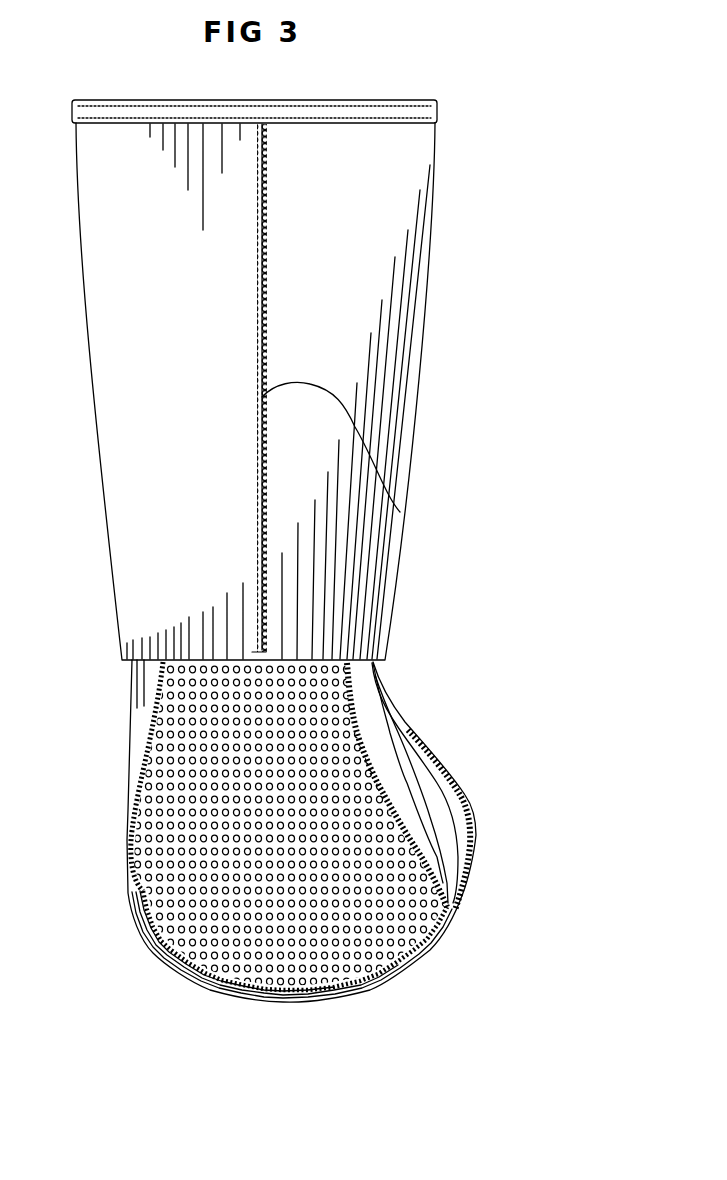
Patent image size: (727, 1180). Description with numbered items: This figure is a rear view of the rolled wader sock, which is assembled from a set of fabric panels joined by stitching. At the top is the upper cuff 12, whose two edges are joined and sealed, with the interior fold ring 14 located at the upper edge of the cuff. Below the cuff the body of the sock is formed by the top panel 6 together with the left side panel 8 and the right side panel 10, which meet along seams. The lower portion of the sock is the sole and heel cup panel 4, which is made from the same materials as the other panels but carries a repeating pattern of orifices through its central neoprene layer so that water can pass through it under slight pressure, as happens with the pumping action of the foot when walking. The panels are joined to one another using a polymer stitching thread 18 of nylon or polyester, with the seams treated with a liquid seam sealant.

The interior fold ring 14 is at (396, 108).
The upper cuff 12 is at (420, 190).
The polymer stitching thread 18 is at (400, 512).
The left side panel 8 is at (362, 693).
The top panel 6 is at (447, 770).
The right side panel 10 is at (142, 698).
The sole and heel cup panel 4 is at (420, 923).